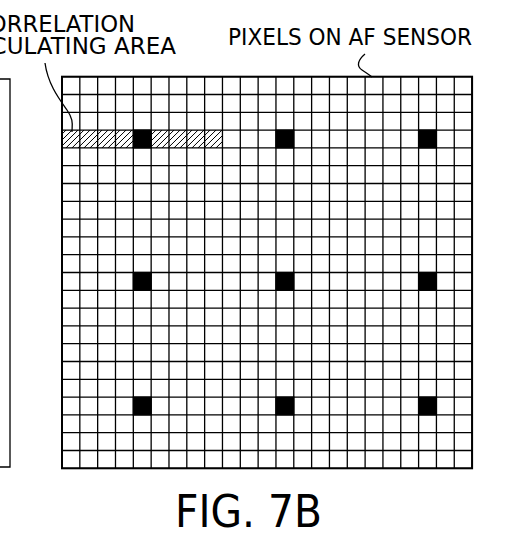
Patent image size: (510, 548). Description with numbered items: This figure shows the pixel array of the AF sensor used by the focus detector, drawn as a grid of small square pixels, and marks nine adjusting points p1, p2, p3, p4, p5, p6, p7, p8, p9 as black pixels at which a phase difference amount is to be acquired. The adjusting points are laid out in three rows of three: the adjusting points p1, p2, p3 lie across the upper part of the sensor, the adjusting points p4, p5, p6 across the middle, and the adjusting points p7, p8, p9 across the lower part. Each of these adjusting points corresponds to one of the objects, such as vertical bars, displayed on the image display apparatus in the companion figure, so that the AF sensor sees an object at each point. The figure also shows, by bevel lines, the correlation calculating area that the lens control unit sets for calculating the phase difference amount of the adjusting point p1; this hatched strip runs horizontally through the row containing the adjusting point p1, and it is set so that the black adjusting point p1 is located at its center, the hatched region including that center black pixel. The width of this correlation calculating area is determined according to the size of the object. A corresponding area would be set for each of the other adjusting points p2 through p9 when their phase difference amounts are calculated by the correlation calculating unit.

The adjusting point p1 is at (136, 127).
The adjusting point p2 is at (279, 127).
The adjusting point p3 is at (422, 127).
The adjusting point p4 is at (136, 270).
The adjusting point p5 is at (279, 270).
The adjusting point p6 is at (422, 270).
The adjusting point p7 is at (136, 394).
The adjusting point p8 is at (279, 394).
The adjusting point p9 is at (422, 394).